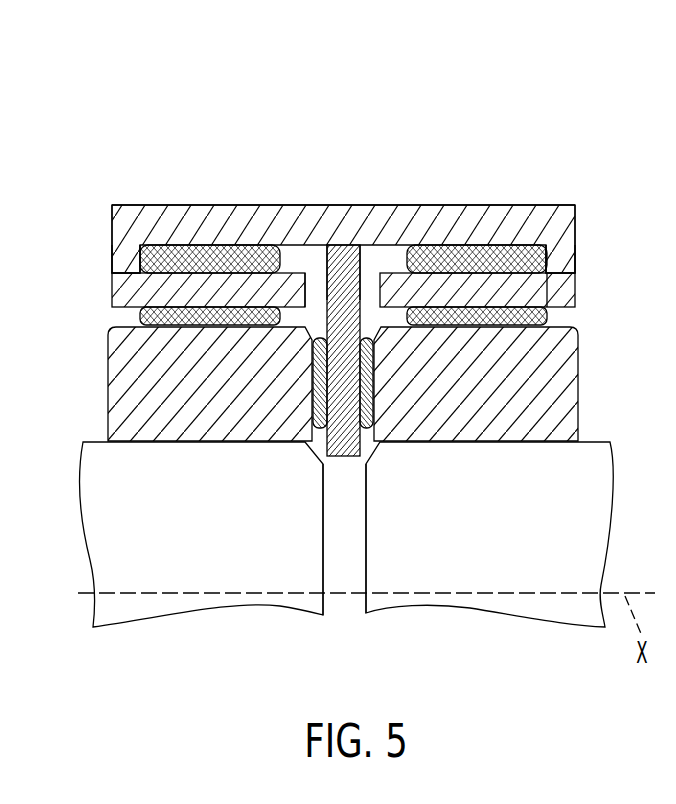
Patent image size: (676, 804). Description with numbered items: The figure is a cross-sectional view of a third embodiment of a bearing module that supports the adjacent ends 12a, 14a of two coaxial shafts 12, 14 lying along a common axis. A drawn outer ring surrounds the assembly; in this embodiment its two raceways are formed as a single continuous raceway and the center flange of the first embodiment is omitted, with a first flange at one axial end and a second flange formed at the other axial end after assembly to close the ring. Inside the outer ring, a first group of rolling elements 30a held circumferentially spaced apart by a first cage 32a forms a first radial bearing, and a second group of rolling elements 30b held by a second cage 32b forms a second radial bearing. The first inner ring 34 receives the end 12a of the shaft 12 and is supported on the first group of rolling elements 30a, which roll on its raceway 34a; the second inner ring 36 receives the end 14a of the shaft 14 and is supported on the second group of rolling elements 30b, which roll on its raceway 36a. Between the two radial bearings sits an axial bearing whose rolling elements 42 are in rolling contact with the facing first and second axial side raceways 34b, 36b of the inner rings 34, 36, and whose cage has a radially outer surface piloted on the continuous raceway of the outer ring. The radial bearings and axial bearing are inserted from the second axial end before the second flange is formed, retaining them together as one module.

The first coaxial shaft 12 is at (198, 541).
The end of first shaft 12a is at (325, 577).
The second coaxial shaft 14 is at (475, 541).
The end of second shaft 14a is at (362, 577).
The first group of rolling elements 30a is at (133, 300).
The second group of rolling elements 30b is at (575, 280).
The first cage 32a is at (135, 288).
The second cage 32b is at (550, 298).
The first inner ring 34 is at (200, 399).
The first raceway of first inner ring 34a is at (145, 316).
The first axial side raceway 34b is at (320, 338).
The second inner ring 36 is at (467, 397).
The second raceway of second inner ring 36a is at (560, 318).
The second axial side raceway 36b is at (408, 255).
The axial bearing rolling elements 42 is at (318, 350).